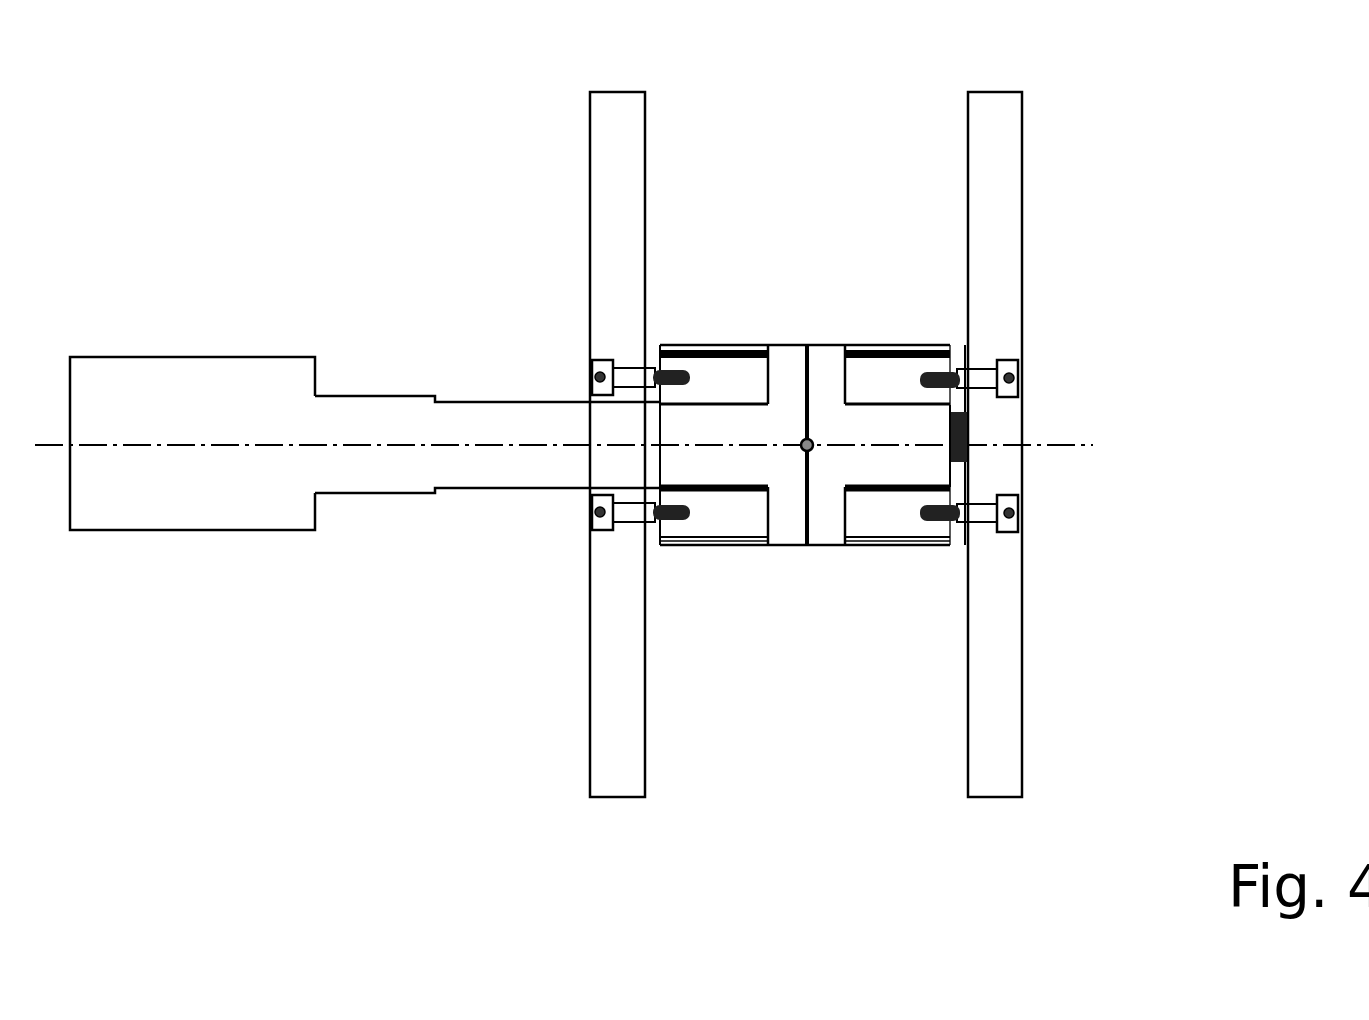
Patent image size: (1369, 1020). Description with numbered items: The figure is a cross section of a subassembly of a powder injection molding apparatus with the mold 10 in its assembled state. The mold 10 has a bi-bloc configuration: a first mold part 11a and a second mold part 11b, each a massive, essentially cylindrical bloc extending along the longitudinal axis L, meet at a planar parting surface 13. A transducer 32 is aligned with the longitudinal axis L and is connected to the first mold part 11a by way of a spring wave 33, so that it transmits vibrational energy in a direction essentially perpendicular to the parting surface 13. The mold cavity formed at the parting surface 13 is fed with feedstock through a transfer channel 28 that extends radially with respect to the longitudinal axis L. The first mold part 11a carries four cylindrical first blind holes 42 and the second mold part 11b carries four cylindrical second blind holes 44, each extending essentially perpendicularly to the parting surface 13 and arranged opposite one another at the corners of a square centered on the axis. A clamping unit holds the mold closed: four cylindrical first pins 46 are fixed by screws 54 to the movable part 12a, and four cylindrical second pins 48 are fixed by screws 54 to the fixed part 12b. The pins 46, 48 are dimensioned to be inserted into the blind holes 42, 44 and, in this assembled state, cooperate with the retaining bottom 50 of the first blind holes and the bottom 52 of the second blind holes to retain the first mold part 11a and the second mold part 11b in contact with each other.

The mold 10 is at (873, 293).
The first mold part 11a is at (779, 358).
The second mold part 11b is at (829, 360).
The movable part 12a is at (610, 82).
The fixed part 12b is at (1005, 82).
The parting surface 13 is at (805, 552).
The transfer channel 28 is at (810, 452).
The transducer 32 is at (330, 350).
The spring wave 33 is at (495, 397).
The first blind holes 42 is at (729, 407).
The second blind holes 44 is at (885, 407).
The first pins 46 is at (700, 502).
The second pins 48 is at (908, 503).
The bottom of the first blind holes 50 is at (765, 518).
The bottom of the second blind holes 52 is at (843, 533).
The screws 54 is at (585, 383).
The longitudinal axis L is at (580, 439).